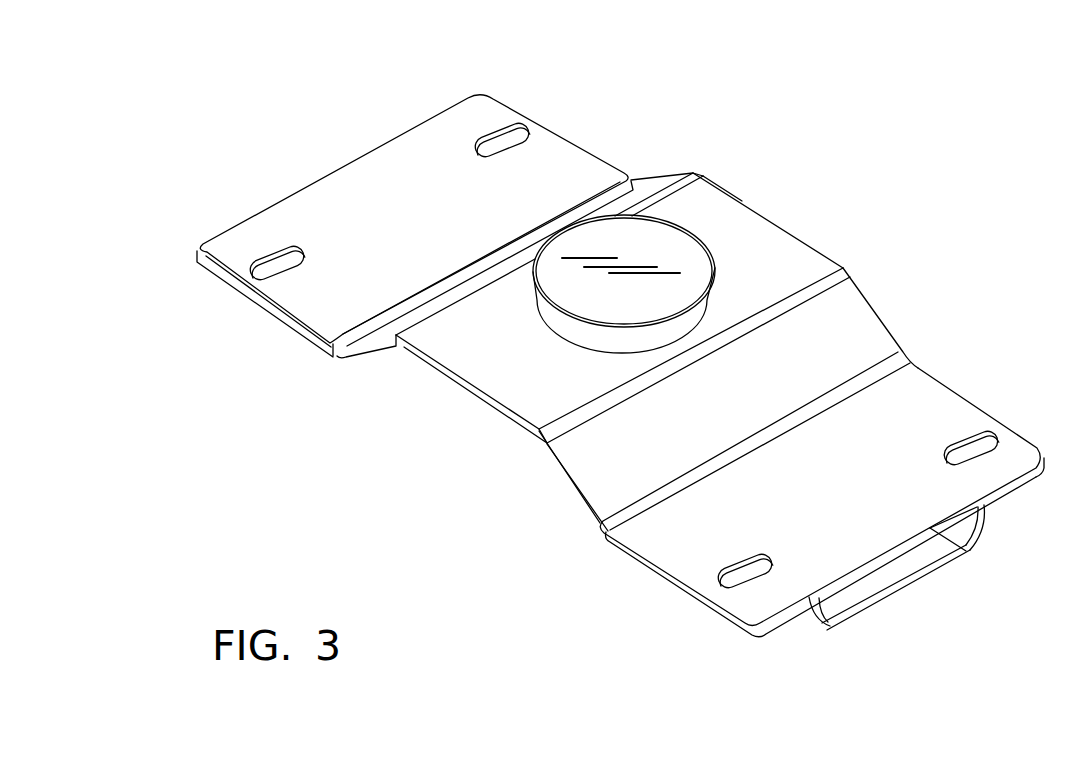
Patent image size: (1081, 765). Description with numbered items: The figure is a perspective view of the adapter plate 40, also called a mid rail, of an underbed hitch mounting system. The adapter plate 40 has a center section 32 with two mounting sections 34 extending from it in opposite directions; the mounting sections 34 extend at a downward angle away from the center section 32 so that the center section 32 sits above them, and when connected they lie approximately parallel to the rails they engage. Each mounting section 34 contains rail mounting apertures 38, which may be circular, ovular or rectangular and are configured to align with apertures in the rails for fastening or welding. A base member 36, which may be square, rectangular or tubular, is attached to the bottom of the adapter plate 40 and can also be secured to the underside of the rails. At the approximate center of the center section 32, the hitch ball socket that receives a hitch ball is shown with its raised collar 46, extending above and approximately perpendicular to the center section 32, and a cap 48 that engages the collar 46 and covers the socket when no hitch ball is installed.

The center section 32 is at (488, 372).
The mounting section 34 is at (295, 301).
The base member 36 is at (915, 558).
The rail mounting aperture 38 is at (502, 142).
The adapter plate 40 is at (832, 182).
The raised collar 46 is at (695, 315).
The cap 48 is at (678, 247).